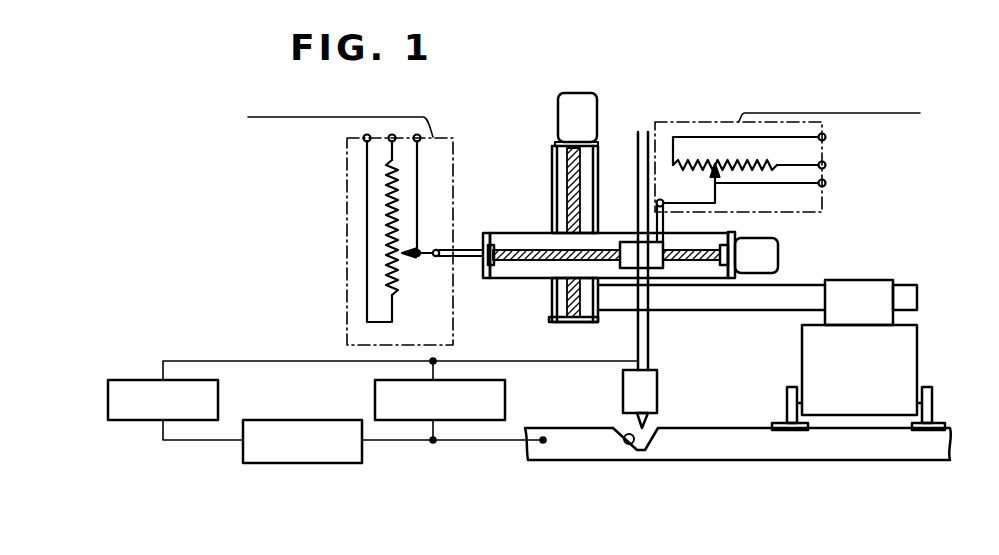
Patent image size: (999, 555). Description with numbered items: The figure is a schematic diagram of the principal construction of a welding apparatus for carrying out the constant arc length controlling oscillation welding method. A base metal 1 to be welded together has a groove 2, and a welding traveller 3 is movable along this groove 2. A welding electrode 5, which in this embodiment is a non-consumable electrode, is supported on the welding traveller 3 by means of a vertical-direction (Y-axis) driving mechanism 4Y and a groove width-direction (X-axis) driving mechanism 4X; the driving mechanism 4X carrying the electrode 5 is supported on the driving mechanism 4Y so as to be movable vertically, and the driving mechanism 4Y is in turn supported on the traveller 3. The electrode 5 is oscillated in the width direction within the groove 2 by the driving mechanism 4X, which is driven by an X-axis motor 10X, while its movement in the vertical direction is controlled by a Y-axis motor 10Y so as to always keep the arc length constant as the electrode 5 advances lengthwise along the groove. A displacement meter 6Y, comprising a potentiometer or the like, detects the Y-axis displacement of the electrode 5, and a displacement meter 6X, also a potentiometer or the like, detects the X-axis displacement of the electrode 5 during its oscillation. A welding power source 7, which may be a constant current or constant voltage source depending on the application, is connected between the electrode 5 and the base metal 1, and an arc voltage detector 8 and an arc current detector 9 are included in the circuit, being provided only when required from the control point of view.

The base metal 1 is at (729, 455).
The groove 2 is at (634, 447).
The welding traveller 3 is at (808, 353).
The groove width-direction driving mechanism 4X is at (720, 234).
The vertical-direction driving mechanism 4Y is at (552, 181).
The welding electrode 5 is at (649, 422).
The displacement meter 6X is at (822, 143).
The displacement meter 6Y is at (450, 137).
The welding power source 7 is at (108, 400).
The arc voltage detector 8 is at (375, 393).
The arc current detector 9 is at (258, 463).
The X-axis motor 10X is at (778, 252).
The Y-axis motor 10Y is at (596, 106).